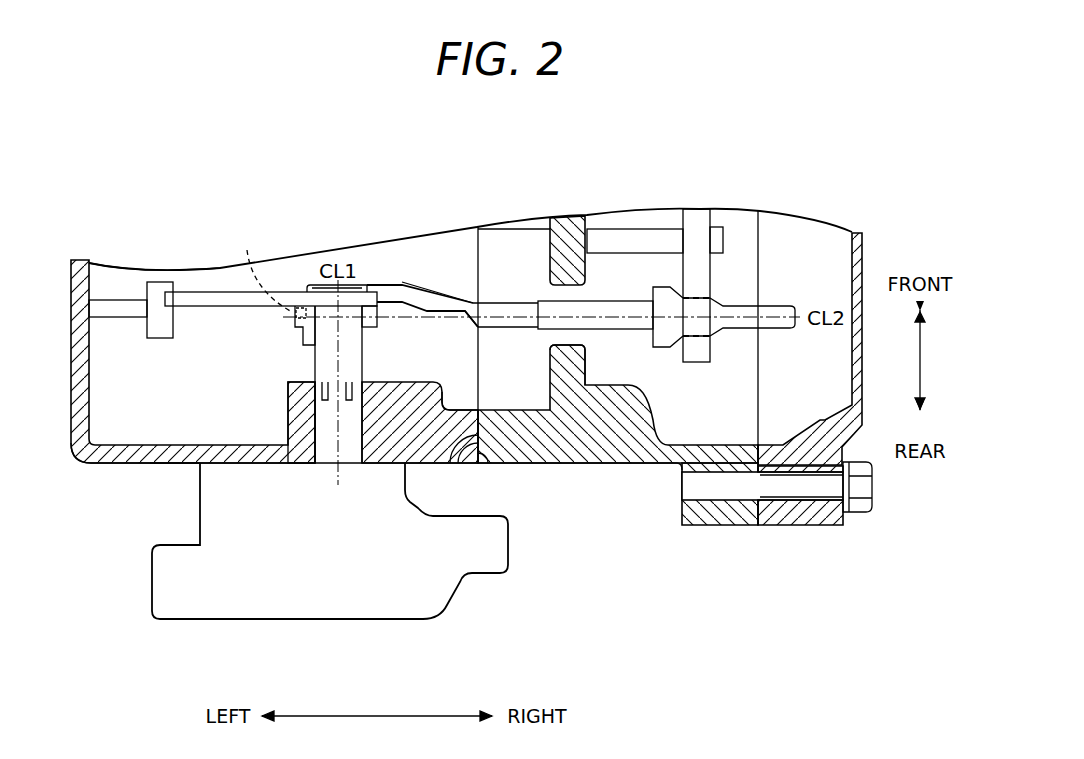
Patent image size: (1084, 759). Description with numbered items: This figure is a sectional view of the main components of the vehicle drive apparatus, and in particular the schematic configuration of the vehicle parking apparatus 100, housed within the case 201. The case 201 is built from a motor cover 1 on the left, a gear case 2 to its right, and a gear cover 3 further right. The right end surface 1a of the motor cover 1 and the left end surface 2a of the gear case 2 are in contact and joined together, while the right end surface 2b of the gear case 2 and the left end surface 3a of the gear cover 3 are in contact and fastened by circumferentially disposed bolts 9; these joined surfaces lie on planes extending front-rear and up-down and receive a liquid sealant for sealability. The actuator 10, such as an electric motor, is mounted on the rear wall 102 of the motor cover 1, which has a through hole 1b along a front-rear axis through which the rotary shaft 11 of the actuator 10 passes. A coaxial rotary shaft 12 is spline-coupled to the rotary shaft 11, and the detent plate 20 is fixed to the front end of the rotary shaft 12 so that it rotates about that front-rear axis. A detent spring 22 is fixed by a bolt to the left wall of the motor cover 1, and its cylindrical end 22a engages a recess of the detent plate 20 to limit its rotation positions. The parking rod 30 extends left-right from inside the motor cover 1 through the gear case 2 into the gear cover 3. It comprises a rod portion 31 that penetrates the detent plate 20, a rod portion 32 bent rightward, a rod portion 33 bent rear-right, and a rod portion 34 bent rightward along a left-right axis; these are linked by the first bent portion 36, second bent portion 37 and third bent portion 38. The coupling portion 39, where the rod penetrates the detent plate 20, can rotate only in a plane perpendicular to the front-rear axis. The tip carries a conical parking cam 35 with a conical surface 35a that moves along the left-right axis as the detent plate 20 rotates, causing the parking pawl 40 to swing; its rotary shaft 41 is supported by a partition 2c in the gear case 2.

The motor cover 1 is at (72, 379).
The right end surface of the motor cover 1a is at (490, 466).
The through hole 1b is at (340, 423).
The gear case 2 is at (618, 466).
The left end surface of the gear case 2a is at (458, 466).
The right end surface of the gear case 2b is at (762, 515).
The partition 2c is at (550, 252).
The gear cover 3 is at (866, 268).
The left end surface of the gear cover 3a is at (742, 528).
The bolts 9 is at (873, 487).
The actuator 10 is at (275, 622).
The rotary shaft of the actuator 11 is at (310, 438).
The rotary shaft 12 is at (363, 342).
The detent plate 20 is at (218, 308).
The detent spring 22 is at (120, 318).
The cylindrical end of the detent spring 22a is at (160, 340).
The parking rod 30 is at (636, 335).
The rod portion 31 is at (303, 335).
The rod portion 32 is at (385, 283).
The rod portion 33 is at (443, 297).
The rod portion 34 is at (503, 328).
The parking cam 35 is at (658, 348).
The conical surface 35a is at (680, 348).
The first bent portion 36 is at (307, 287).
The second bent portion 37 is at (403, 285).
The third bent portion 38 is at (468, 326).
The coupling portion 39 is at (263, 269).
The parking pawl 40 is at (713, 268).
The rotary shaft 41 is at (640, 228).
The vehicle parking apparatus 100 is at (777, 197).
The rear wall 102 is at (163, 466).
The case 201 is at (108, 468).